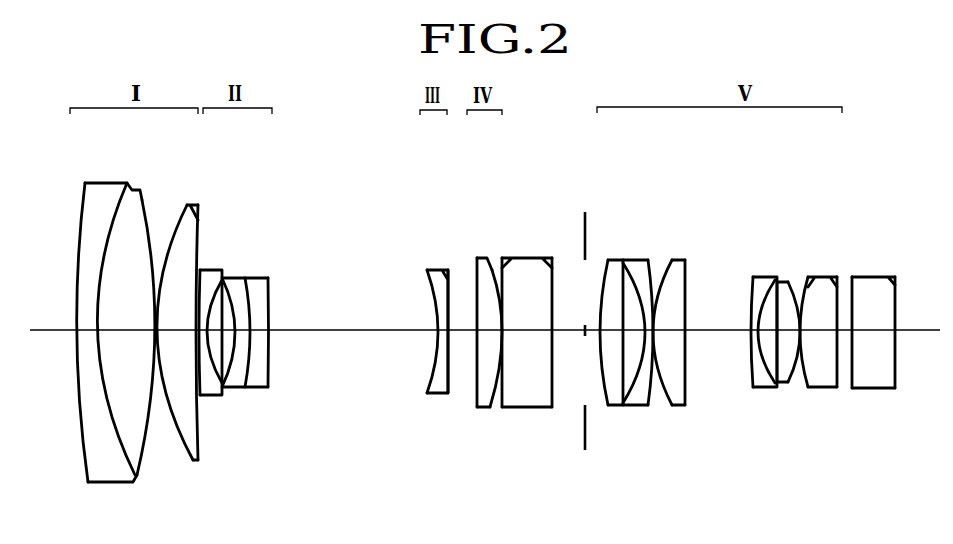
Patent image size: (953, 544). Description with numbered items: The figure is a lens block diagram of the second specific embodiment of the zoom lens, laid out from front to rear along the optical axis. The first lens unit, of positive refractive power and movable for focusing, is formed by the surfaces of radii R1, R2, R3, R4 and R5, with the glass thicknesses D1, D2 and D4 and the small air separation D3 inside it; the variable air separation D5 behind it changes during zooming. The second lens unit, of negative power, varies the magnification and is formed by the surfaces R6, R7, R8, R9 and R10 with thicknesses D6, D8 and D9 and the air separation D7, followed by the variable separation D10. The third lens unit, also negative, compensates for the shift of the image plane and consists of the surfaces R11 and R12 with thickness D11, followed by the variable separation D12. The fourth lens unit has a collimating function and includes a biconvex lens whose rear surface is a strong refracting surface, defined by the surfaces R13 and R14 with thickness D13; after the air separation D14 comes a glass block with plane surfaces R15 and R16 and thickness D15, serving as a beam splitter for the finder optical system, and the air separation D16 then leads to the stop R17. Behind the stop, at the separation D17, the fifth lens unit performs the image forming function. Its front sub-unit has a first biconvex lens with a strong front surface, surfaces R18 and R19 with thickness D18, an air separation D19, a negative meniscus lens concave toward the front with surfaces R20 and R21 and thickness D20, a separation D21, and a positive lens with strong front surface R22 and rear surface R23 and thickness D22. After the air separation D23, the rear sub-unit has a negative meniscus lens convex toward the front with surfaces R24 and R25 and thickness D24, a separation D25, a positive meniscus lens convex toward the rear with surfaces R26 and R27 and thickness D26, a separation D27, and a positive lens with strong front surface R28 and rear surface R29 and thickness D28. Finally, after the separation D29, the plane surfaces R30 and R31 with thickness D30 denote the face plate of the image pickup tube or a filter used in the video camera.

The radius of curvature of first surface R1 is at (77, 197).
The radius of curvature of second surface R2 is at (117, 208).
The radius of curvature of third surface R3 is at (135, 188).
The radius of curvature of fourth surface R4 is at (181, 218).
The radius of curvature of fifth surface R5 is at (193, 205).
The radius of curvature of sixth surface R6 is at (199, 268).
The radius of curvature of seventh surface R7 is at (217, 270).
The radius of curvature of eighth surface R8 is at (232, 277).
The radius of curvature of ninth surface R9 is at (243, 277).
The radius of curvature of tenth surface R10 is at (271, 277).
The radius of curvature of eleventh surface R11 is at (418, 266).
The radius of curvature of twelfth surface R12 is at (438, 268).
The radius of curvature of thirteenth surface R13 is at (470, 256).
The radius of curvature of fourteenth surface R14 is at (489, 268).
The beam splitter glass block front surface R15 is at (517, 257).
The beam splitter glass block rear surface R16 is at (548, 257).
The stop R17 is at (584, 228).
The radius of curvature of eighteenth surface R18 is at (604, 258).
The radius of curvature of nineteenth surface R19 is at (619, 258).
The radius of curvature of twentieth surface R20 is at (637, 258).
The radius of curvature of twenty-first surface R21 is at (652, 258).
The radius of curvature of twenty-second surface R22 is at (666, 258).
The radius of curvature of twenty-third surface R23 is at (691, 258).
The radius of curvature of twenty-fourth surface R24 is at (752, 277).
The radius of curvature of twenty-fifth surface R25 is at (772, 280).
The radius of curvature of twenty-sixth surface R26 is at (779, 282).
The radius of curvature of twenty-seventh surface R27 is at (790, 282).
The radius of curvature of twenty-eighth surface R28 is at (809, 277).
The radius of curvature of twenty-ninth surface R29 is at (836, 277).
The face plate or filter front surface R30 is at (852, 277).
The face plate or filter rear surface R31 is at (894, 277).
The axial thickness D1 is at (85, 332).
The axial thickness D2 is at (102, 332).
The air separation D3 is at (122, 332).
The axial thickness D4 is at (148, 332).
The variable air separation D5 is at (173, 332).
The axial thickness D6 is at (193, 332).
The air separation D7 is at (215, 332).
The axial thickness D8 is at (242, 332).
The axial thickness D9 is at (262, 332).
The variable air separation D10 is at (343, 330).
The axial thickness D11 is at (440, 332).
The variable air separation D12 is at (463, 332).
The axial thickness D13 is at (485, 332).
The air separation D14 is at (512, 338).
The axial thickness D15 is at (532, 332).
The air separation D16 is at (568, 332).
The air separation D17 is at (593, 332).
The axial thickness D18 is at (612, 332).
The air separation D19 is at (624, 332).
The axial thickness D20 is at (637, 332).
The air separation D21 is at (655, 332).
The axial thickness D22 is at (680, 332).
The air separation D23 is at (723, 332).
The axial thickness D24 is at (755, 332).
The air separation D25 is at (777, 340).
The axial thickness D26 is at (798, 332).
The air separation D27 is at (820, 332).
The axial thickness D28 is at (833, 332).
The air separation D29 is at (845, 332).
The axial thickness D30 is at (873, 332).